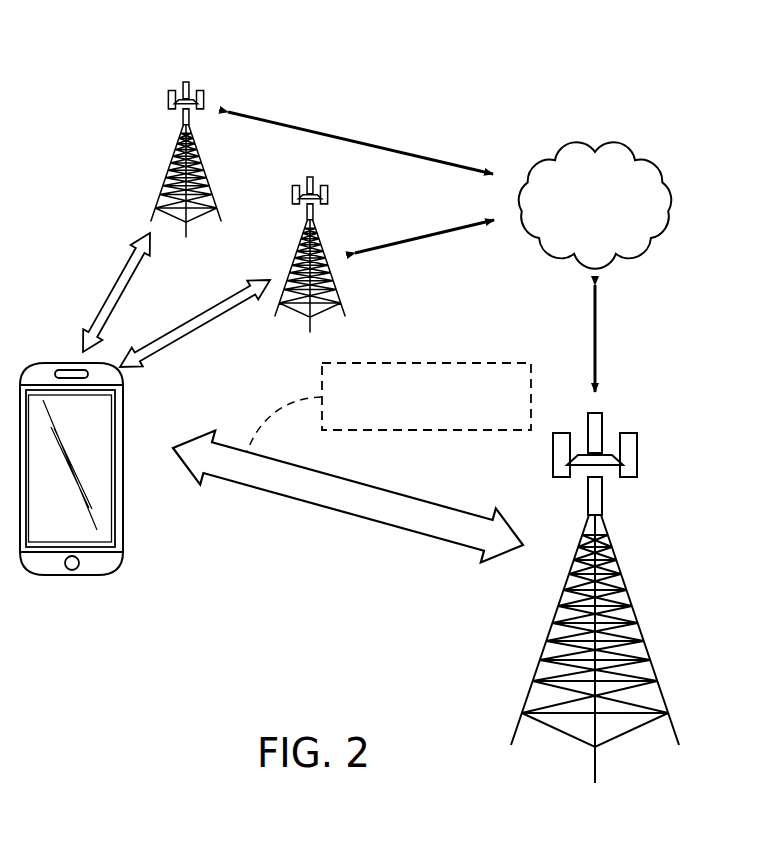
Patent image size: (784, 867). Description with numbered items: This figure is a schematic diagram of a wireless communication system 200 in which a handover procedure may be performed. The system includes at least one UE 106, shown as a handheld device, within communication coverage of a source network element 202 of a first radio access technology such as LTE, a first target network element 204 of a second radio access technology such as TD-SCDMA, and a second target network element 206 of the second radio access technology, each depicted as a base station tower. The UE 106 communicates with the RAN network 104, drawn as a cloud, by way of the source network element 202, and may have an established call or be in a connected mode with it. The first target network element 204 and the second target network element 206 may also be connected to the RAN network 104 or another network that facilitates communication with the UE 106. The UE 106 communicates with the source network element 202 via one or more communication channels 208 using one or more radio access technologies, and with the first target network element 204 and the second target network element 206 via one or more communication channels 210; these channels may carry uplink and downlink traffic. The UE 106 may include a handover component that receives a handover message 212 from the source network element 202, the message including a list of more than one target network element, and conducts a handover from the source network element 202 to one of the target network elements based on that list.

The wireless communication system 200 is at (480, 107).
The RAN network 104 is at (632, 155).
The UE 106 is at (45, 363).
The source network element 202 is at (640, 455).
The first target network element 204 is at (330, 237).
The second target network element 206 is at (173, 160).
The communication channels 208 is at (430, 567).
The communication channels 210 is at (167, 322).
The handover message 212 is at (518, 410).